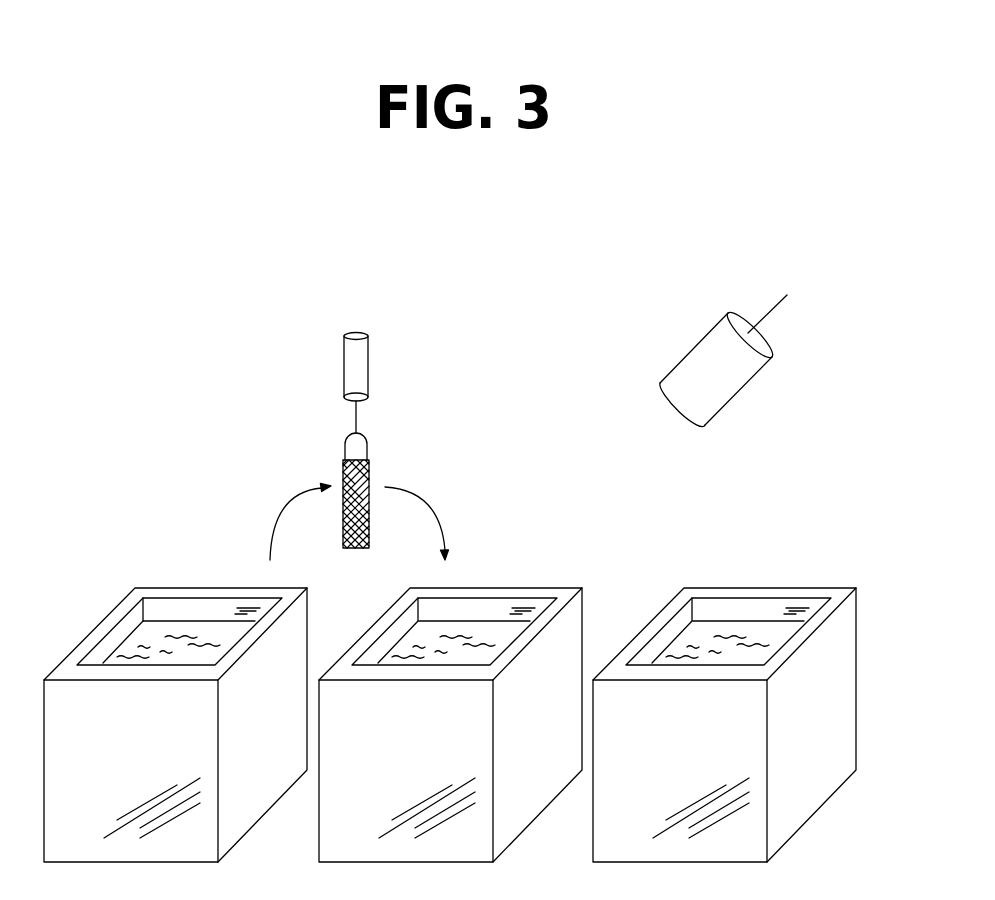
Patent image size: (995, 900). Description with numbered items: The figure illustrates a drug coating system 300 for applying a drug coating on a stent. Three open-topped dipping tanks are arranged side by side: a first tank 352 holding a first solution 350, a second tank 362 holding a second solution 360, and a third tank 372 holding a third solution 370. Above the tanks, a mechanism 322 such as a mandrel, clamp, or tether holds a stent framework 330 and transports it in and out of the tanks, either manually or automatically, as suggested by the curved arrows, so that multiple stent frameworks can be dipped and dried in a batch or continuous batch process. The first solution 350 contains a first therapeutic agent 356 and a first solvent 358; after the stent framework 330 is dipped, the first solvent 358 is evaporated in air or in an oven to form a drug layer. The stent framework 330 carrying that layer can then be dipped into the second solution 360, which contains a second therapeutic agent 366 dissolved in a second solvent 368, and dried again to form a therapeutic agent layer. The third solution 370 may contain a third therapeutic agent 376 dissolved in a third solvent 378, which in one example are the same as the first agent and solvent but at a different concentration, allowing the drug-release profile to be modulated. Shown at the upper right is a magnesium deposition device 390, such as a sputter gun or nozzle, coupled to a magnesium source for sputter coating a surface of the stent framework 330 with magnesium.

The drug coating system 300 is at (163, 286).
The mechanism 322 is at (369, 358).
The stent framework 330 is at (368, 463).
The first solution 350 is at (222, 620).
The first tank 352 is at (208, 587).
The first therapeutic agent 356 is at (138, 635).
The first solvent 358 is at (127, 645).
The second solution 360 is at (470, 620).
The second tank 362 is at (555, 587).
The second therapeutic agent 366 is at (415, 635).
The second solvent 368 is at (402, 645).
The third solution 370 is at (743, 620).
The third tank 372 is at (827, 588).
The third therapeutic agent 376 is at (685, 637).
The third solvent 378 is at (673, 645).
The magnesium deposition device 390 is at (700, 348).